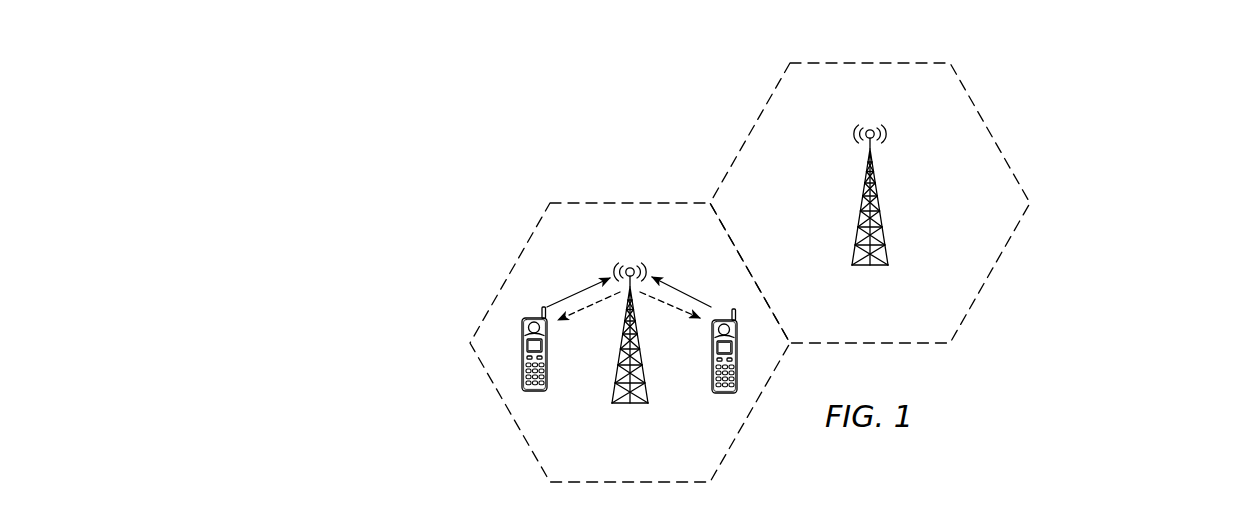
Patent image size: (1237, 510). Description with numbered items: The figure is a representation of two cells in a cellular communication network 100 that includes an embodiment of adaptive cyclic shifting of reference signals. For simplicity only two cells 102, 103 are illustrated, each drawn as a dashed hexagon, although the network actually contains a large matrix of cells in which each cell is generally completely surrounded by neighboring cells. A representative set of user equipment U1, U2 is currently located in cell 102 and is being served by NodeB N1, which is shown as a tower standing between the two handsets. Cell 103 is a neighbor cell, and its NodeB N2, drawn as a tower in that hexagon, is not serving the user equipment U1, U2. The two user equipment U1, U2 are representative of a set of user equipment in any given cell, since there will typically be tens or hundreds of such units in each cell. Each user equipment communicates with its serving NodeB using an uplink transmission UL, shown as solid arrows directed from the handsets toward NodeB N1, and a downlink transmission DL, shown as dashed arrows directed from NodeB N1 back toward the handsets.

The cellular communication network 100 is at (619, 114).
The cell 102 is at (510, 265).
The cell 103 is at (986, 124).
The NodeB N1 is at (630, 347).
The NodeB N2 is at (870, 209).
The user equipment U1 is at (724, 361).
The user equipment U2 is at (534, 360).
The uplink transmission UL is at (629, 289).
The downlink transmission DL is at (629, 311).